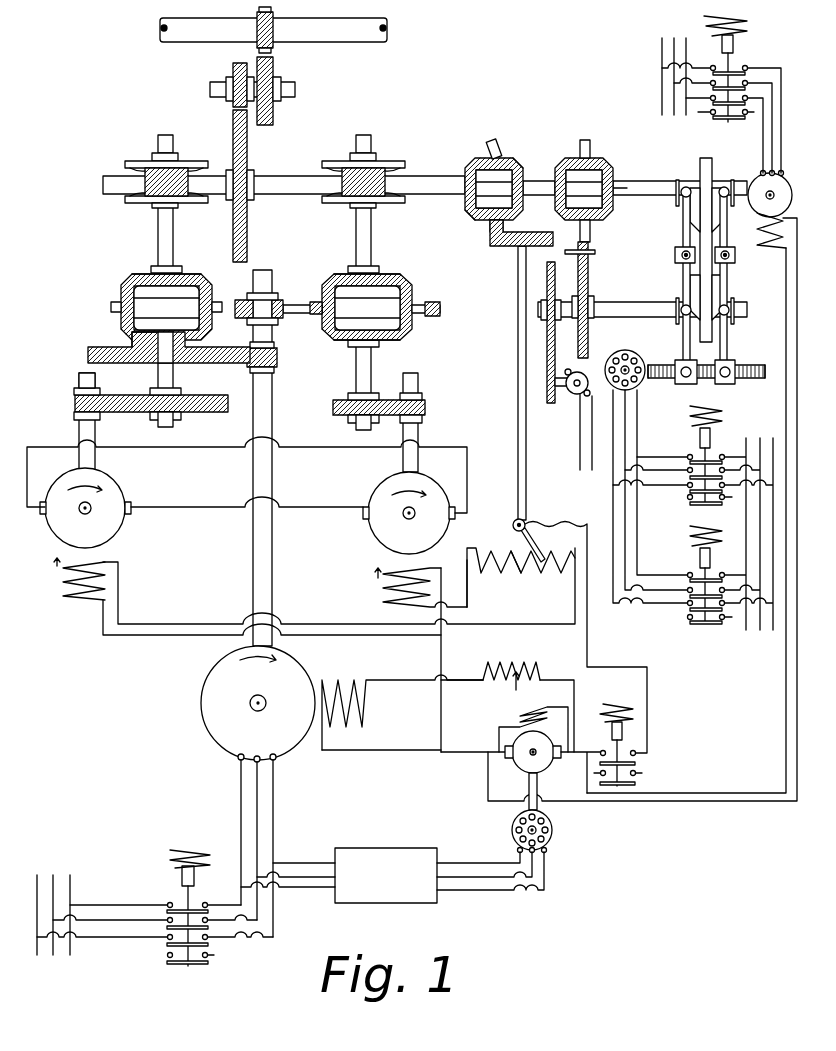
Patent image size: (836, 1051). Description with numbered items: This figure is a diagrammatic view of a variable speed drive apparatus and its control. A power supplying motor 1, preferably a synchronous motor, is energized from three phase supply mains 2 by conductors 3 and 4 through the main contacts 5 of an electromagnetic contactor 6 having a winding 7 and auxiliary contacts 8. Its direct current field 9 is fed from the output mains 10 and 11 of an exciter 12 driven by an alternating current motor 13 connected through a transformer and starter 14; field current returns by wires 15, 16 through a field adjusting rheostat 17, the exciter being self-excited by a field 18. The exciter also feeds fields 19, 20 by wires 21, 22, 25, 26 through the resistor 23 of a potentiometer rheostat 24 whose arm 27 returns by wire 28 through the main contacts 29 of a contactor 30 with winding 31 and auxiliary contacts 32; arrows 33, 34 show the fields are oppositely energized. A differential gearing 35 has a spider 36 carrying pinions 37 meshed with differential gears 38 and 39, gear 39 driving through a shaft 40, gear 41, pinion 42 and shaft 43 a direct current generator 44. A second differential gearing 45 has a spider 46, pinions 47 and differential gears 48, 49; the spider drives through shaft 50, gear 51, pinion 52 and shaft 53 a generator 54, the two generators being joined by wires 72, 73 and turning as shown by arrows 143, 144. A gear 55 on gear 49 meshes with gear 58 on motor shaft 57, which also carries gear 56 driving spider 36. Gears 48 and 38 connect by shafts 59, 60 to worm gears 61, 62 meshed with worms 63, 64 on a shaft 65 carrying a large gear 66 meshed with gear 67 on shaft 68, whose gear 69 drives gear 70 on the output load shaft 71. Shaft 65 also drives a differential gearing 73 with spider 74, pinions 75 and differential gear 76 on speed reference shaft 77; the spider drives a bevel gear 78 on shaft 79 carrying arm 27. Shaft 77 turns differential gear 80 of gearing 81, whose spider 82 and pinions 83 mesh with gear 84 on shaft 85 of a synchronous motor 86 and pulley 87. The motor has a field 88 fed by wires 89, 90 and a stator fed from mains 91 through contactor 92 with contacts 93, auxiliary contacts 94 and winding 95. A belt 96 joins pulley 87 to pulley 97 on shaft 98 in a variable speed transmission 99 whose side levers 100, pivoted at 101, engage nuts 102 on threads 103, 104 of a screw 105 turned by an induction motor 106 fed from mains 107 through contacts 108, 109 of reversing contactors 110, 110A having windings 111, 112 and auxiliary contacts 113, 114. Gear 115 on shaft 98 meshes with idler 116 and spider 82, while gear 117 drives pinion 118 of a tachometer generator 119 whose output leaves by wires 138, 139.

The power supplying motor 1 is at (300, 676).
The three phase supply mains 2 is at (66, 878).
The conductors 3 is at (90, 915).
The conductors 4 is at (240, 801).
The main contacts 5 is at (210, 908).
The electromagnetic contactor 6 is at (202, 912).
The winding 7 is at (193, 859).
The auxiliary contacts 8 is at (166, 957).
The direct current field 9 is at (362, 705).
The direct current output main 10 is at (460, 752).
The direct current output main 11 is at (578, 752).
The exciter 12 is at (533, 740).
The alternating current motor 13 is at (552, 826).
The transformer and starter 14 is at (420, 848).
The wire 15 is at (458, 680).
The wire 16 is at (556, 680).
The field adjusting rheostat 17 is at (511, 681).
The field 18 is at (522, 721).
The field 19 is at (409, 583).
The field 20 is at (65, 575).
The wire 21 is at (441, 655).
The wire 22 is at (471, 595).
The resistor 23 is at (521, 580).
The potentiometer type of rheostat 24 is at (521, 572).
The wire 25 is at (381, 635).
The wire 26 is at (355, 624).
The arm 27 is at (535, 544).
The wire 28 is at (577, 524).
The main contacts 29 is at (636, 756).
The electromagnetic contactor 30 is at (628, 739).
The winding 31 is at (604, 733).
The auxiliary contacts 32 is at (642, 775).
The arrow 33 is at (383, 588).
The arrow 34 is at (51, 558).
The differential gearing 35 is at (361, 306).
The spider 36 is at (367, 308).
The pinions 37 is at (322, 297).
The differential gear 38 is at (398, 274).
The differential gear 39 is at (382, 341).
The shaft 40 is at (356, 377).
The gear 41 is at (350, 415).
The pinion 42 is at (422, 408).
The shaft 43 is at (418, 435).
The direct current generator 44 is at (409, 508).
The differential gearing 45 is at (158, 298).
The spider 46 is at (166, 308).
The pinions 47 is at (118, 291).
The differential gear 48 is at (140, 274).
The differential gear 49 is at (132, 340).
The shaft 50 is at (173, 375).
The gear 51 is at (194, 413).
The pinion 52 is at (74, 400).
The shaft 53 is at (79, 428).
The direct current generator 54 is at (84, 501).
The gear 55 is at (88, 355).
The gear 56 is at (280, 318).
The shaft 57 is at (272, 385).
The gear 58 is at (277, 360).
The shaft 59 is at (173, 225).
The shaft 60 is at (356, 225).
The worm or helical gear 61 is at (138, 203).
The worm or helical gear 62 is at (392, 205).
The worm or helical gear 63 is at (178, 172).
The worm or helical gear 64 is at (382, 172).
The shaft 65 is at (284, 194).
The large gear 66 is at (247, 157).
The smaller gear 67 is at (233, 104).
The shaft 68 is at (210, 92).
The larger gear 69 is at (273, 108).
The smaller gear 70 is at (273, 14).
The power output load shaft 71 is at (343, 42).
The wire 72 is at (314, 507).
The wire 73 is at (287, 324).
The spider 74 is at (500, 148).
The pinions 75 is at (519, 164).
The differential gear 76 is at (523, 198).
The speed reference shaft 77 is at (539, 181).
The bevel gear 78 is at (503, 246).
The shaft 79 is at (518, 322).
The differential gear 80 is at (523, 216).
The differential gearing 81 is at (589, 184).
The spider 82 is at (590, 146).
The pinions 83 is at (575, 162).
The differential gear 84 is at (622, 181).
The shaft 85 is at (640, 186).
The synchronous motor 86 is at (784, 180).
The intermediate variable diameter pulley 87 is at (687, 245).
The direct current field 88 is at (771, 236).
The wire 89 is at (786, 273).
The wire 90 is at (698, 803).
The three phase mains 91 is at (683, 42).
The magnetic contactor 92 is at (721, 94).
The main contacts 93 is at (748, 70).
The auxiliary contacts 94 is at (721, 119).
The winding 95 is at (740, 45).
The belt 96 is at (700, 235).
The variable diameter pulley wheel 97 is at (700, 332).
The shaft 98 is at (650, 302).
The variable speed transmission 99 is at (705, 276).
The side levers 100 is at (683, 215).
The pivots 101 is at (675, 255).
The nuts 102 is at (676, 362).
The left hand thread 103 is at (660, 378).
The right hand thread 104 is at (758, 378).
The rotary screw 105 is at (706, 373).
The induction motor 106 is at (624, 350).
The three phase mains 107 is at (773, 440).
The main contacts 108 is at (650, 440).
The main contacts 109 is at (650, 534).
The magnetic reversing contactor 110 is at (691, 461).
The magnetic reversing contactor 110A is at (691, 581).
The winding 111 is at (690, 418).
The winding 112 is at (690, 538).
The auxiliary contacts 113 is at (686, 498).
The auxiliary contacts 114 is at (686, 618).
The gear 115 is at (588, 283).
The idler gear 116 is at (590, 254).
The gear 117 is at (547, 287).
The pinion 118 is at (555, 382).
The tachometer generator 119 is at (570, 370).
The wire 138 is at (580, 426).
The wire 139 is at (592, 440).
The arrow 143 is at (55, 466).
The arrow 144 is at (438, 474).